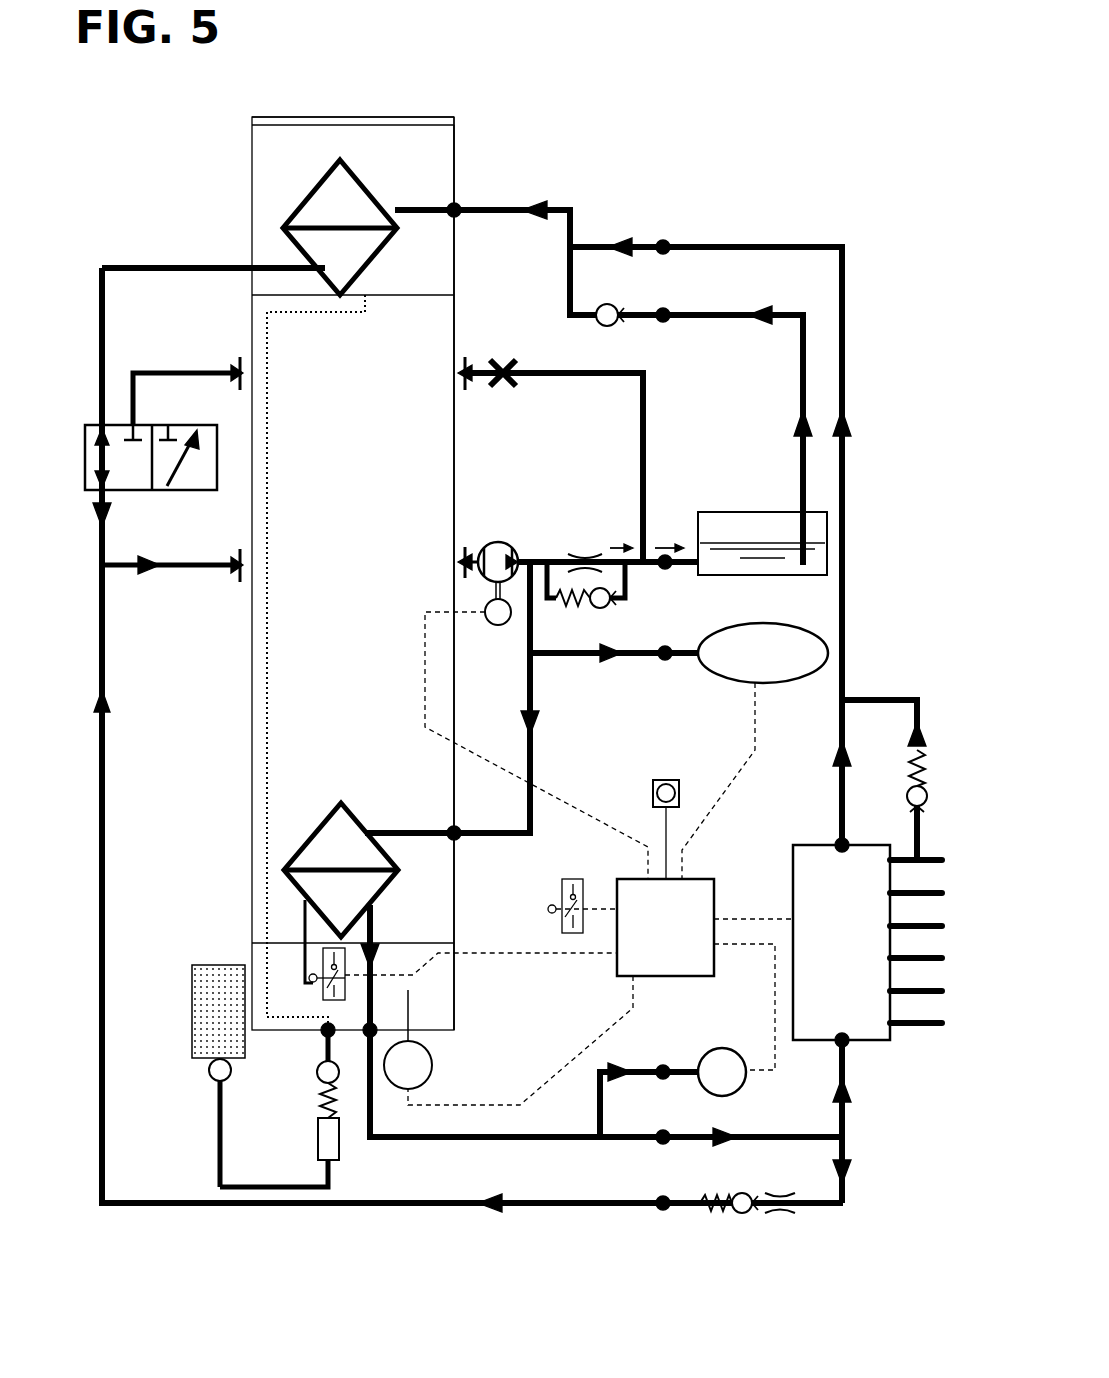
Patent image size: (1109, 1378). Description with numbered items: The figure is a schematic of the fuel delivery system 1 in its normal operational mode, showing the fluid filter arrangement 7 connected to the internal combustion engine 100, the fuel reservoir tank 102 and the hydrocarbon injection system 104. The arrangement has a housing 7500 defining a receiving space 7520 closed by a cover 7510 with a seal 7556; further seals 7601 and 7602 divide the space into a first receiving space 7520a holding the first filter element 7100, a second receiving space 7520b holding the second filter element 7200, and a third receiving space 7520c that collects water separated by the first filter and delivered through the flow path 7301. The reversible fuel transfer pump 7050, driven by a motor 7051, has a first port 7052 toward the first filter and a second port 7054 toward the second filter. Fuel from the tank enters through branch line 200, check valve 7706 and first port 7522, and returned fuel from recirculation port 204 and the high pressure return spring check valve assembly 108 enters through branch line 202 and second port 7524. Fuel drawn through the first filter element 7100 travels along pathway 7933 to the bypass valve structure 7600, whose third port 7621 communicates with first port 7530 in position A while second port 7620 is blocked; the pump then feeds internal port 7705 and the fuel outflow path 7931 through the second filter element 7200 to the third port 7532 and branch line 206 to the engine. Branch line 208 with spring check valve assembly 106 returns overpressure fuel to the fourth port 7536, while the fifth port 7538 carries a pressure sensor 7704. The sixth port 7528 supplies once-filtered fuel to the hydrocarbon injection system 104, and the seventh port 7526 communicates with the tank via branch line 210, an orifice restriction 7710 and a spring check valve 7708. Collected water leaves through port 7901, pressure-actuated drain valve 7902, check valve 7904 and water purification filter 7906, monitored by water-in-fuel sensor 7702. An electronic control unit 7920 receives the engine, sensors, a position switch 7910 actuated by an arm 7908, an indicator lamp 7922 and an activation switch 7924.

The fuel delivery system 1 is at (840, 135).
The fluid filter arrangement 7 is at (695, 106).
The internal combustion engine 100 is at (792, 895).
The fuel reservoir tank 102 is at (773, 578).
The hydrocarbon injection system 104 is at (798, 681).
The spring check valve assembly 106 is at (748, 1191).
The high pressure return spring check valve assembly 108 is at (908, 802).
The branch line 200 is at (801, 355).
The branch line 202 is at (845, 400).
The fuel recirculation port 204 is at (841, 843).
The branch line 206 is at (765, 1135).
The branch line 208 is at (847, 1183).
The branch line 210 is at (680, 566).
The reversible fuel transfer pump 7050 is at (499, 543).
The motor 7051 is at (494, 625).
The first port 7052 is at (482, 580).
The second port 7054 is at (514, 580).
The first filter element 7100 is at (325, 183).
The second filter element 7200 is at (323, 825).
The flow path 7301 is at (268, 708).
The housing 7500 is at (455, 161).
The cover 7510 is at (460, 117).
The receiving space 7520 is at (452, 998).
The first receiving space 7520a is at (450, 268).
The second receiving space 7520b is at (445, 868).
The third receiving space 7520c is at (447, 963).
The first port 7522 is at (665, 313).
The second port 7524 is at (665, 245).
The seventh port 7526 is at (663, 569).
The sixth port 7528 is at (667, 660).
The first port of bypass valve 7530 is at (98, 495).
The third port 7532 is at (670, 1132).
The fourth port 7536 is at (660, 1198).
The fifth port 7538 is at (665, 1068).
The seal 7556 is at (456, 125).
The bypass valve structure 7600 is at (147, 350).
The seal 7601 is at (456, 296).
The seal 7602 is at (455, 943).
The second port of bypass valve 7620 is at (137, 423).
The third port of bypass valve 7621 is at (98, 423).
The water-in-fuel sensor 7702 is at (456, 209).
The pressure sensor 7704 is at (724, 1048).
The internal port 7705 is at (463, 838).
The check valve 7706 is at (606, 327).
The spring check valve 7708 is at (598, 612).
The orifice restriction 7710 is at (583, 553).
The port 7901 is at (325, 1033).
The pressure-actuated drain valve 7902 is at (322, 1093).
The check valve 7904 is at (228, 1075).
The water purification filter 7906 is at (232, 1060).
The arm 7908 is at (305, 933).
The position switch 7910 is at (324, 992).
The electronic control unit 7920 is at (665, 927).
The indicator lamp 7922 is at (665, 779).
The activation switch 7924 is at (575, 876).
The fuel outflow path 7931 is at (373, 925).
The pathway 7933 is at (225, 267).